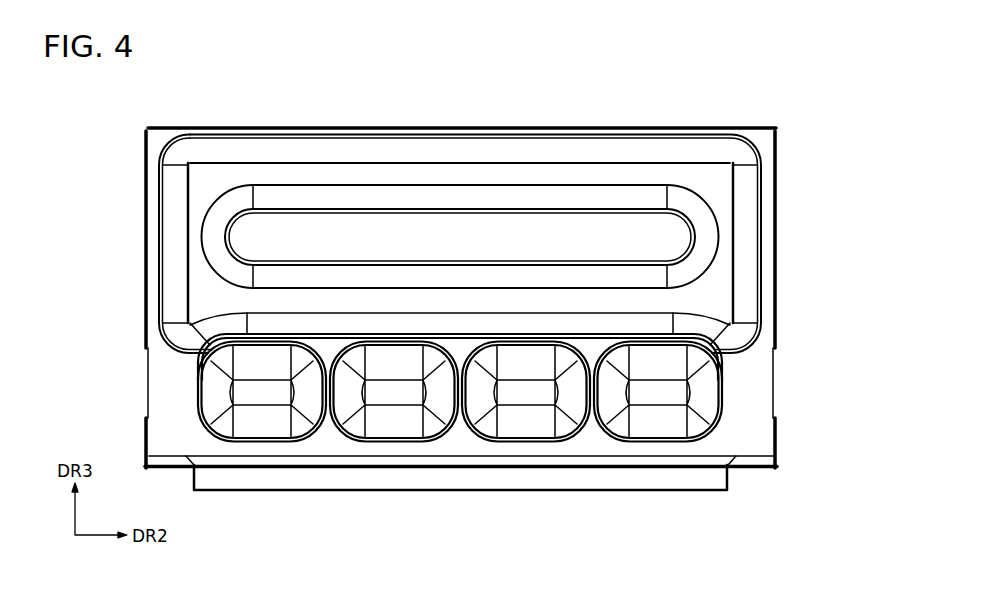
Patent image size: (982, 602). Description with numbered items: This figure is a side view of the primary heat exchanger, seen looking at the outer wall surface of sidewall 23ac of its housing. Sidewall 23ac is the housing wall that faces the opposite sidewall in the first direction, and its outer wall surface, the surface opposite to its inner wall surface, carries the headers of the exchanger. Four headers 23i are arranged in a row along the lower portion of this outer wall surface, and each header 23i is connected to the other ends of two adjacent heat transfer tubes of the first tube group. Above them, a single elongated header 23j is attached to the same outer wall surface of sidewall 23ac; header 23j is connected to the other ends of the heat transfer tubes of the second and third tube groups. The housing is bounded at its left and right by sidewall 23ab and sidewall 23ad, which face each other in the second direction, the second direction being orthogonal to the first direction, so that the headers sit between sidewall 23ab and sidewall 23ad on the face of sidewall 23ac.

The header 23i is at (268, 427).
The header 23j is at (722, 293).
The sidewall 23ab is at (148, 380).
The sidewall 23ac is at (745, 383).
The sidewall 23ad is at (775, 360).